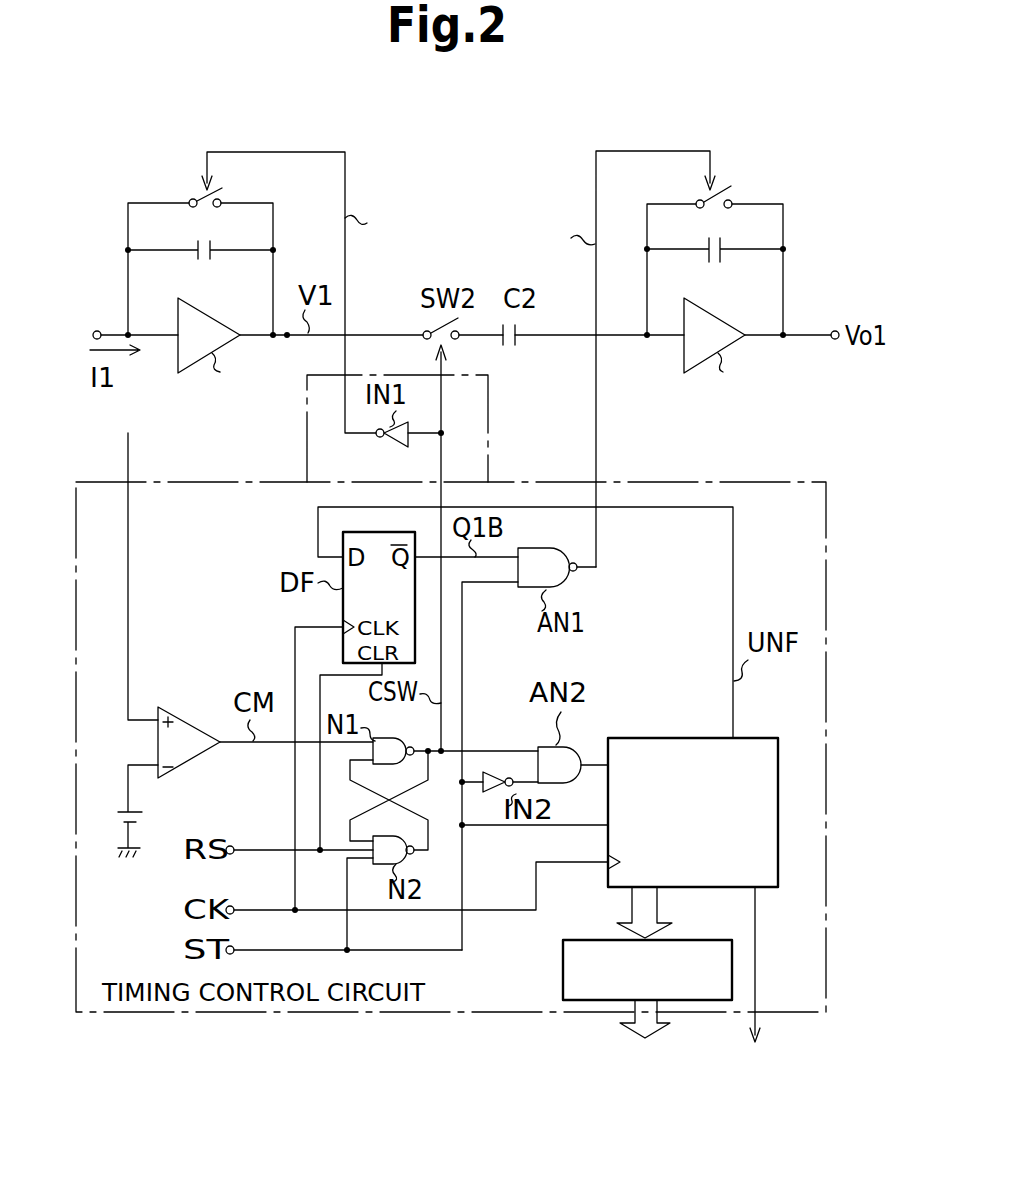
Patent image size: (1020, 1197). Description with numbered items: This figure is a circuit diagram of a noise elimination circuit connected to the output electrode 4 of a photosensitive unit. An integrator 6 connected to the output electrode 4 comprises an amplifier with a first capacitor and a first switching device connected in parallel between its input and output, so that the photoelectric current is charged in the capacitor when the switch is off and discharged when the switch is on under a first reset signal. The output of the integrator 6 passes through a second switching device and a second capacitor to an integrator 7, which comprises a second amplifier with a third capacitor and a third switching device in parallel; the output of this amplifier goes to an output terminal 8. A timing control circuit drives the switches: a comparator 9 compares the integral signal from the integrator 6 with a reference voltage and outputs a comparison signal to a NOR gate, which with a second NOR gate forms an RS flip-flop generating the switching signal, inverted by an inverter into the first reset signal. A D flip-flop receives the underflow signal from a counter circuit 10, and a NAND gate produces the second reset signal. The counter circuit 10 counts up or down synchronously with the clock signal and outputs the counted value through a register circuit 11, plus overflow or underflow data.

The output electrode 4 is at (96, 331).
The integrator 6 is at (159, 183).
The integrator 7 is at (778, 165).
The output terminal 8 is at (833, 329).
The comparator 9 is at (186, 708).
The counter circuit 10 is at (683, 742).
The register circuit 11 is at (693, 941).